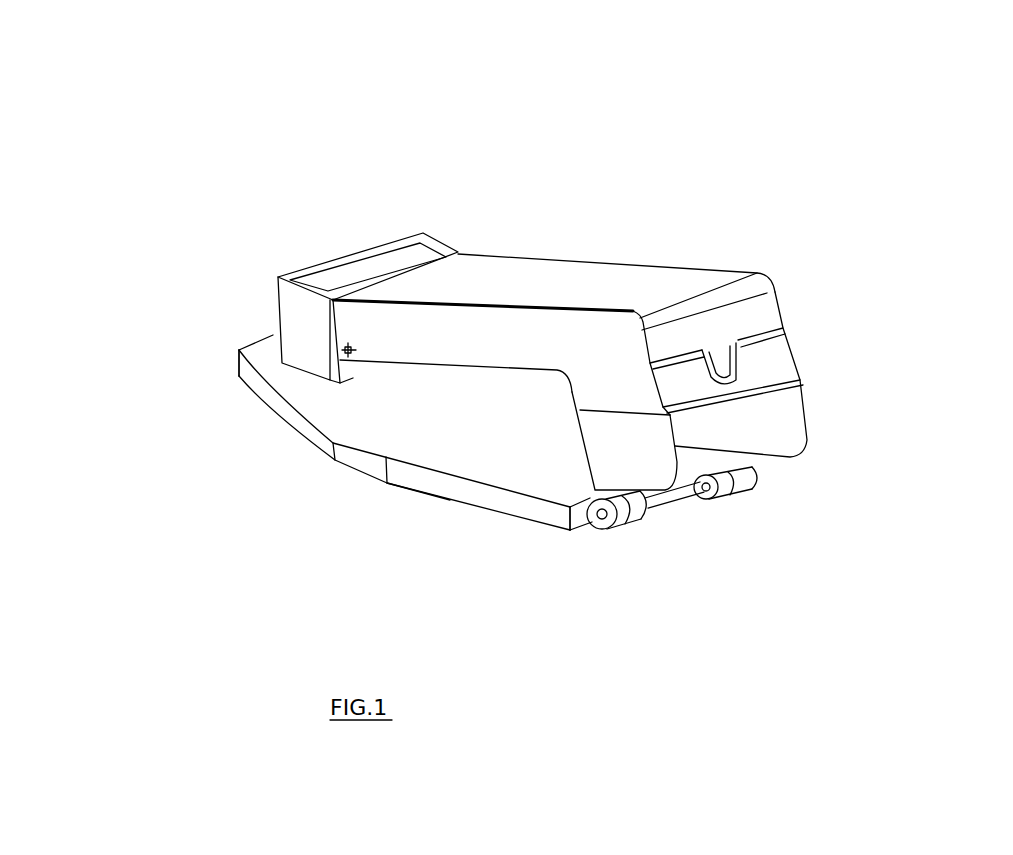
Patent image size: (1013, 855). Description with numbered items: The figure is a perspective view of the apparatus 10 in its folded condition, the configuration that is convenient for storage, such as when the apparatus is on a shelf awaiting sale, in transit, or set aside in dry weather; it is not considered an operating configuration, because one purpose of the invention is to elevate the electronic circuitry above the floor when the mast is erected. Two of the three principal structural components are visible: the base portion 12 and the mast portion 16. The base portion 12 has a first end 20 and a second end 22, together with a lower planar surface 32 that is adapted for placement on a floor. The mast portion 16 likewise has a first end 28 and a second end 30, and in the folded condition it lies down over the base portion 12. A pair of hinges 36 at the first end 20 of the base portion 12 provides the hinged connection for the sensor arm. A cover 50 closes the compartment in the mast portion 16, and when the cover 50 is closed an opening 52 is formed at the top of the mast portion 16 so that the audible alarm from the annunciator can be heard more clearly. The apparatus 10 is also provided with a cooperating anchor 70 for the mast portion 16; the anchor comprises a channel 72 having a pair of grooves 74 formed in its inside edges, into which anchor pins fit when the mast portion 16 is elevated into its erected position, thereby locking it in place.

The apparatus 10 is at (692, 128).
The base portion 12 is at (357, 435).
The mast portion 16 is at (625, 276).
The first end 20 is at (527, 562).
The second end 22 is at (180, 382).
The first end 28 is at (497, 211).
The second end 30 is at (818, 272).
The lower planar surface 32 is at (357, 502).
The hinges 36 is at (638, 548).
The cover 50 is at (620, 455).
The opening 52 is at (746, 363).
The anchor 70 is at (297, 215).
The channel 72 is at (347, 240).
The grooves 74 is at (453, 240).